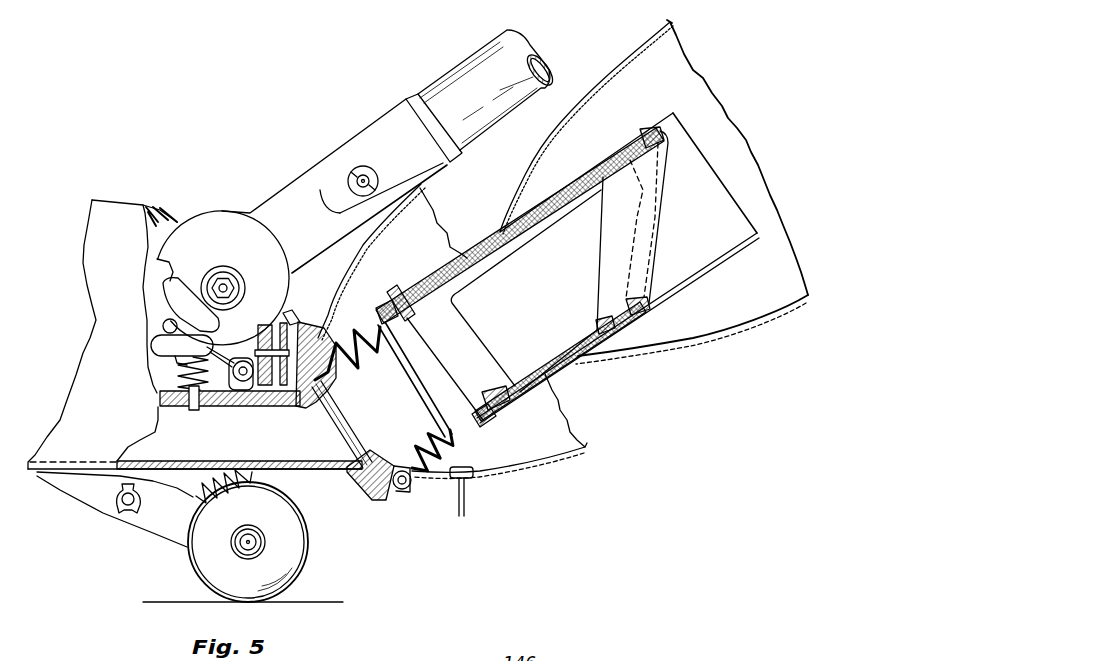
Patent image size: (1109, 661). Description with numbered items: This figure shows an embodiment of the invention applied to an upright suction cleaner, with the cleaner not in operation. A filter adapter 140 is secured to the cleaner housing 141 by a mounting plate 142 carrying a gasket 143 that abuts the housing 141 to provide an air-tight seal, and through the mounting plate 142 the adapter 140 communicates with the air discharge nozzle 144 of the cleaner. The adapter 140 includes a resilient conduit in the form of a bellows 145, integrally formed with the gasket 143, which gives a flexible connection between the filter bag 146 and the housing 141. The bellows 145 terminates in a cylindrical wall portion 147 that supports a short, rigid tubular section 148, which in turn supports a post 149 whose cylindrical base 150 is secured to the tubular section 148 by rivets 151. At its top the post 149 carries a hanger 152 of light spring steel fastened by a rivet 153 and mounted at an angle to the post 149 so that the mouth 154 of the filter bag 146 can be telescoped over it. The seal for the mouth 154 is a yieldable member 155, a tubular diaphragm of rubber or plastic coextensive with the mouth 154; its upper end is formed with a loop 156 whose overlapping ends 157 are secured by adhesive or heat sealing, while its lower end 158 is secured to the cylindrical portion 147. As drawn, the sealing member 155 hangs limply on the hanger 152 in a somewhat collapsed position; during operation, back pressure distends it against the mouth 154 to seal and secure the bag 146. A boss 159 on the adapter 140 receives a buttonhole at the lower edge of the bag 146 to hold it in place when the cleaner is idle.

The filter adapter 140 is at (398, 418).
The cleaner housing 141 is at (272, 318).
The mounting plate 142 is at (384, 500).
The gasket 143 is at (350, 443).
The air discharge nozzle 144 is at (267, 449).
The bellows 145 is at (330, 343).
The filter bag 146 is at (685, 77).
The cylindrical wall portion 147 is at (470, 431).
The rigid tubular section 148 is at (493, 415).
The post 149 is at (525, 238).
The cylindrical base 150 is at (460, 338).
The rivets 151 is at (413, 303).
The hanger 152 is at (643, 222).
The rivet 153 is at (647, 136).
The mouth of the filter bag 154 is at (660, 294).
The yieldable member 155 is at (573, 352).
The loop 156 is at (647, 245).
The overlapping ends 157 is at (606, 322).
The lower end of the sealing member 158 is at (487, 422).
The boss 159 is at (384, 312).